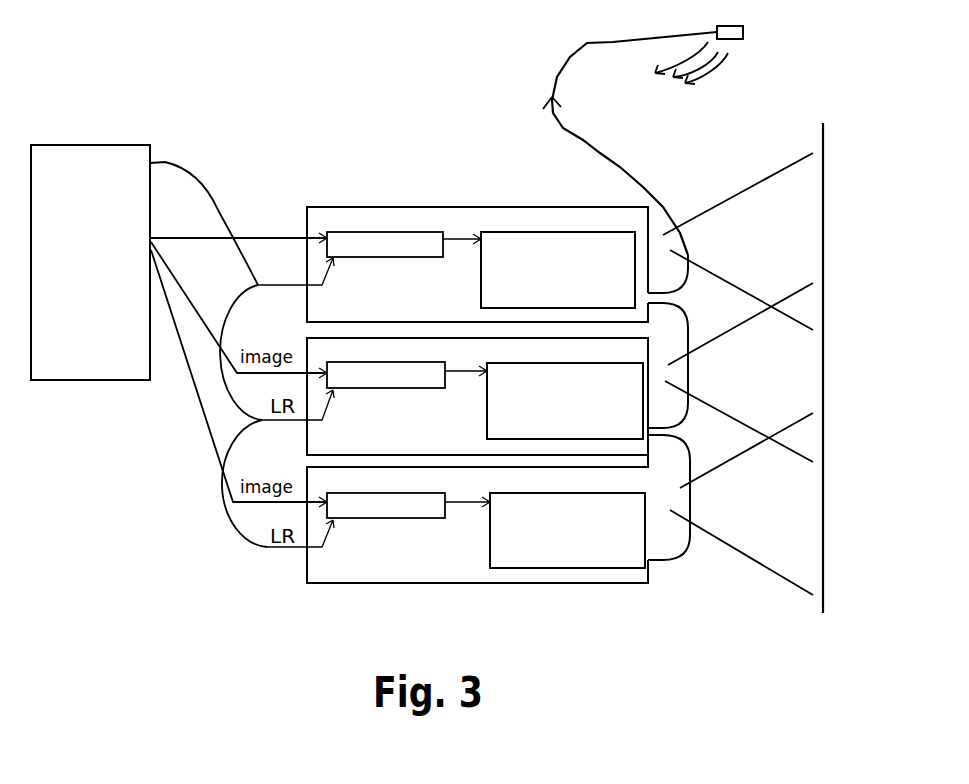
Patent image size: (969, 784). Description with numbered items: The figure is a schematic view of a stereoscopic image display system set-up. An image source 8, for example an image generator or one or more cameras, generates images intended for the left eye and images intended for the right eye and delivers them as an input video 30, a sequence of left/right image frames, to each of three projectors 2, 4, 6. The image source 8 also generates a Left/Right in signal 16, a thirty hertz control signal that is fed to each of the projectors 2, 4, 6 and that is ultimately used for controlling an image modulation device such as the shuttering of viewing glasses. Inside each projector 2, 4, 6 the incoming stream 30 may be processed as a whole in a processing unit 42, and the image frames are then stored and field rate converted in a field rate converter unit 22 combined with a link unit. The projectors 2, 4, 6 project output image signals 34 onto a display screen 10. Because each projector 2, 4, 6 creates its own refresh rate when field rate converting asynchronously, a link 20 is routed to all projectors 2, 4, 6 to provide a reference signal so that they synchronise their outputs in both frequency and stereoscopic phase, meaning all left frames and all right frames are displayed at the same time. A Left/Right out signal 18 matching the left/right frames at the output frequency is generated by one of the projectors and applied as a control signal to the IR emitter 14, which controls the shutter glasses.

The projector 2 is at (423, 205).
The projector 4 is at (298, 345).
The projector 6 is at (377, 575).
The image source 8 is at (95, 358).
The display screen 10 is at (820, 595).
The IR emitter 14 is at (715, 27).
The Left/Right in signal 16 is at (167, 160).
The Left/Right out signal 18 is at (583, 137).
The link 20 is at (667, 365).
The field rate converter unit 22 is at (547, 230).
The input video 30 is at (185, 233).
The output image signals 34 is at (782, 225).
The processing unit 42 is at (365, 258).